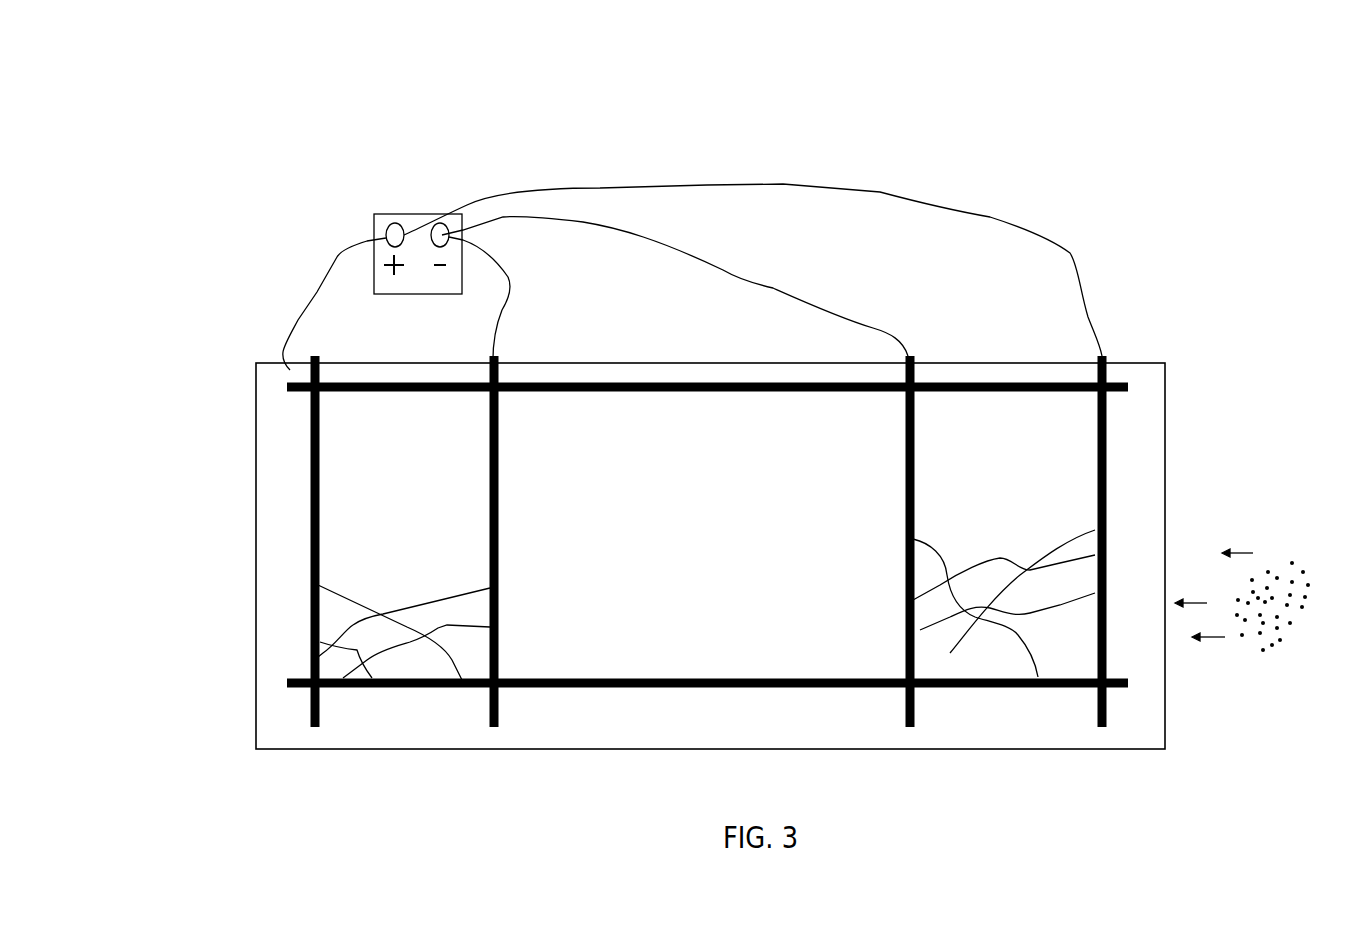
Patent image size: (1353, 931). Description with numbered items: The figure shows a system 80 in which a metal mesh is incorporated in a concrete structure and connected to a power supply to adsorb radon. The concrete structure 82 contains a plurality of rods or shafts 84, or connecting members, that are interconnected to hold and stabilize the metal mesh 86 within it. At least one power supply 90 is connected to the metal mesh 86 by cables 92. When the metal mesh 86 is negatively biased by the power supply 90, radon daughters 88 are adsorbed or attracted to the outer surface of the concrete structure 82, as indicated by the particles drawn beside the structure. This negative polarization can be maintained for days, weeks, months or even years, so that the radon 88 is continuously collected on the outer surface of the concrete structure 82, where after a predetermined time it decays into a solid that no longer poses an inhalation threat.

The system 80 is at (848, 116).
The concrete structure 82 is at (1168, 422).
The rods or shafts 84 is at (312, 487).
The metal mesh 86 is at (353, 625).
The radon daughters 88 is at (1277, 655).
The power supply 90 is at (410, 214).
The cables 92 is at (310, 298).